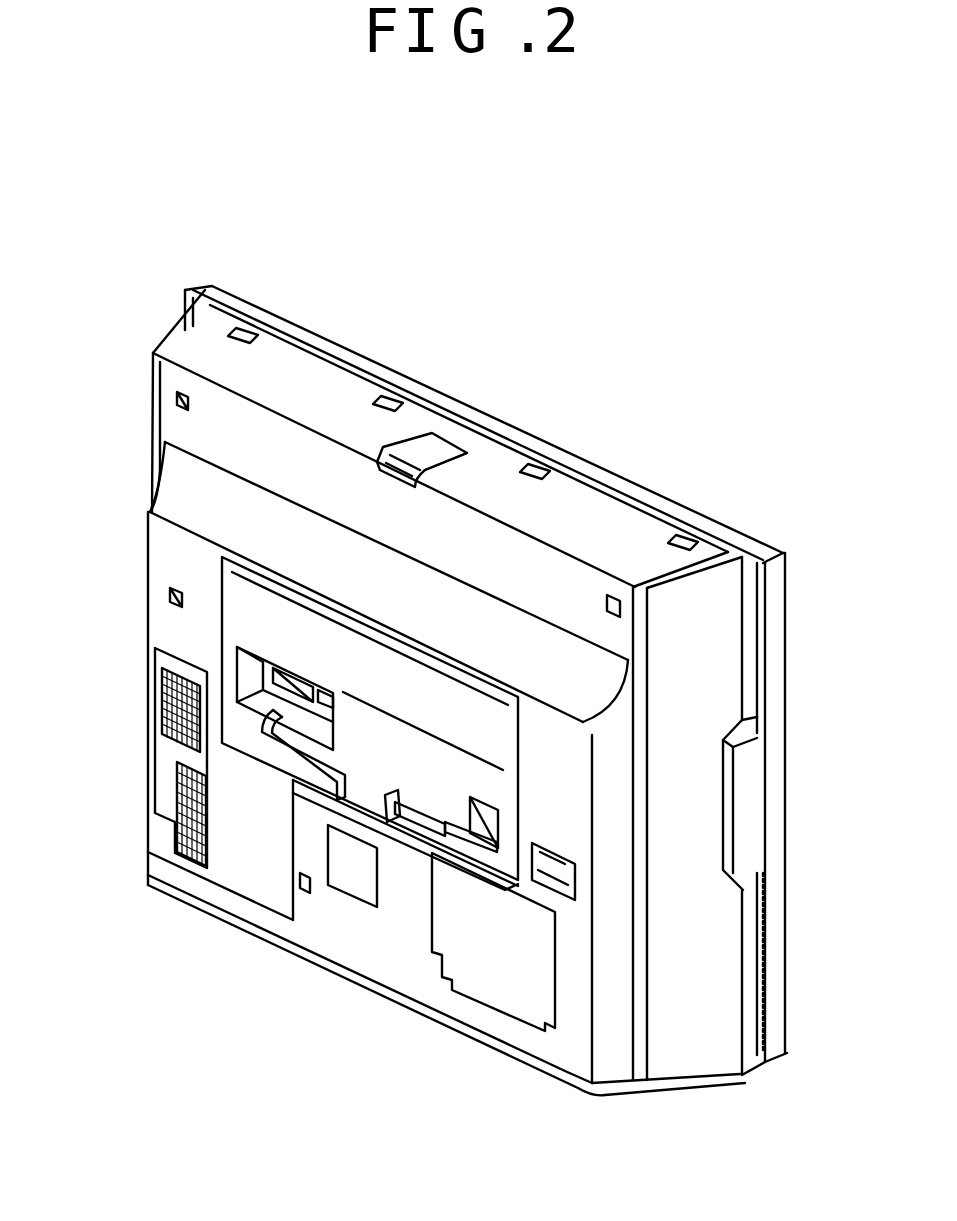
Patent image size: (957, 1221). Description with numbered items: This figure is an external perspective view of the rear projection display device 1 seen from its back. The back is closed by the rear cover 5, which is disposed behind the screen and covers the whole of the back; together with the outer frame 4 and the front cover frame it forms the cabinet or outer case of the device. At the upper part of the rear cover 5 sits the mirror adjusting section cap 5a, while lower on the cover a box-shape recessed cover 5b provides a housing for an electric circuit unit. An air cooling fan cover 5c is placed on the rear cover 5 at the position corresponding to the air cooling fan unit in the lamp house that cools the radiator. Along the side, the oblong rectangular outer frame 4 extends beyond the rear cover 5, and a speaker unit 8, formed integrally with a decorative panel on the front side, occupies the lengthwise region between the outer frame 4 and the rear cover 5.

The rear projection display device 1 is at (546, 247).
The outer frame 4 is at (758, 548).
The rear cover 5 is at (216, 332).
The mirror adjusting section cap 5a is at (407, 462).
The box-shape recessed cover 5b is at (235, 592).
The air cooling fan cover 5c is at (167, 805).
The speaker unit 8 is at (745, 807).